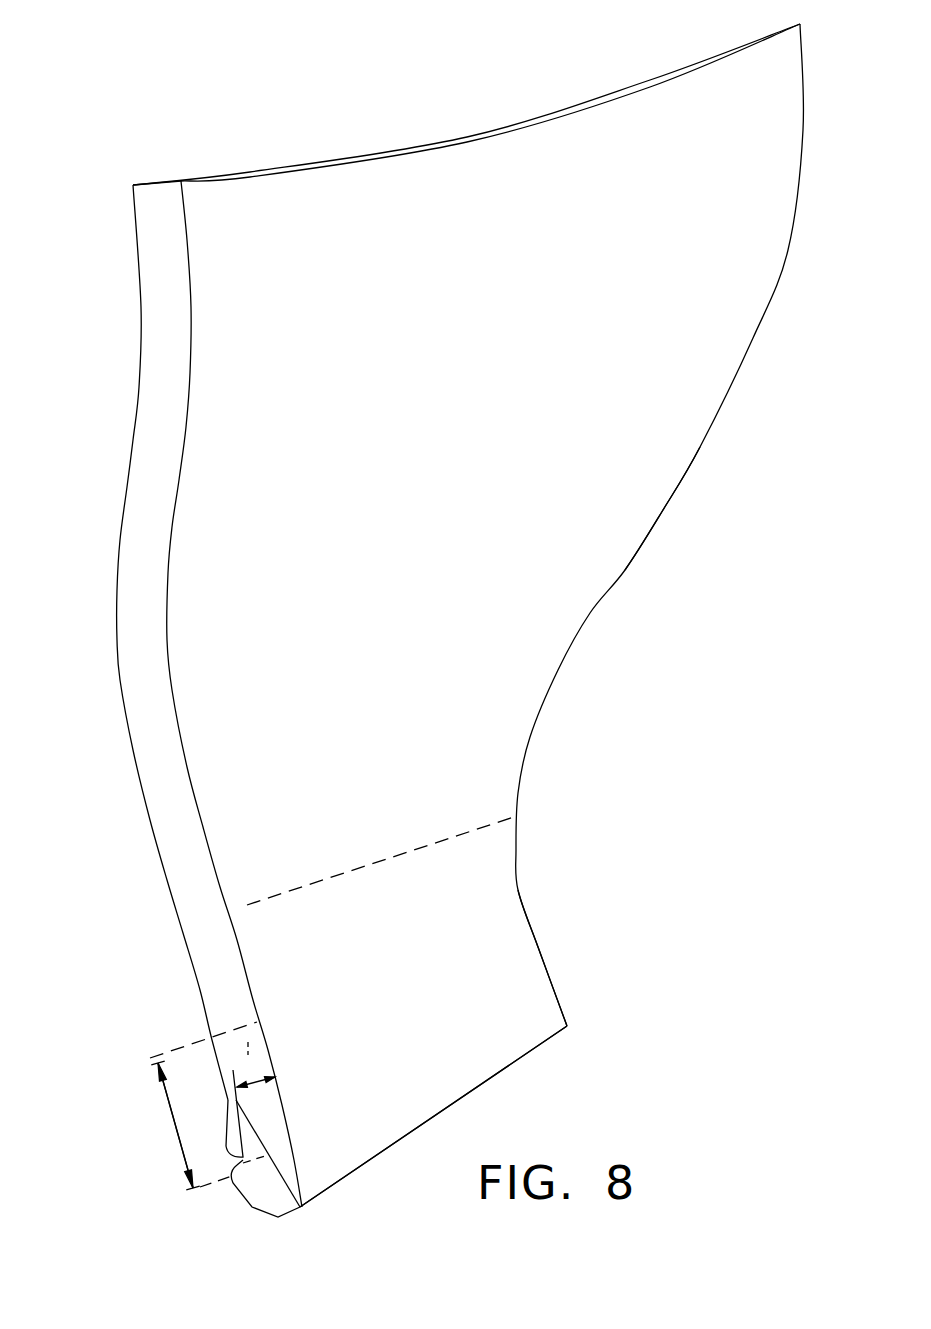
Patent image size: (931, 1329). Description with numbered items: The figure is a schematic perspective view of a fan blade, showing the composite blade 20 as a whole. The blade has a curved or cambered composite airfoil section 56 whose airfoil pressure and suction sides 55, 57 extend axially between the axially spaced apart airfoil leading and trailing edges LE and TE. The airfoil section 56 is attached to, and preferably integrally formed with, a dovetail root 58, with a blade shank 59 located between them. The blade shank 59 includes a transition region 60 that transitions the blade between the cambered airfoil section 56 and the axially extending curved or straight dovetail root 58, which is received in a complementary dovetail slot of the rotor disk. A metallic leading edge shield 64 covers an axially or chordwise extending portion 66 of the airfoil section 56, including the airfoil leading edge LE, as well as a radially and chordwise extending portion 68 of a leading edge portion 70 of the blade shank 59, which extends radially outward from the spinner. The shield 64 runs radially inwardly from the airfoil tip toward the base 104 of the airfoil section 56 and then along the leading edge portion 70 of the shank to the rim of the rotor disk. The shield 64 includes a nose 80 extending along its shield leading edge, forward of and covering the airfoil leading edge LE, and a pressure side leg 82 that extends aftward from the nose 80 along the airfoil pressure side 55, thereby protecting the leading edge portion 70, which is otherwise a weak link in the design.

The composite blade 20 is at (540, 1092).
The airfoil pressure side 55 is at (467, 137).
The composite airfoil section 56 is at (391, 419).
The airfoil suction side 57 is at (723, 308).
The dovetail root 58 is at (537, 1019).
The blade shank 59 is at (343, 1075).
The transition region 60 is at (345, 1120).
The metallic leading edge shield 64 is at (203, 923).
The axially or chordwise extending portion 66 is at (163, 183).
The radially and chordwise extending portion 68 is at (262, 1022).
The leading edge portion of the blade shank 70 is at (177, 1137).
The nose 80 is at (187, 1125).
The pressure side leg 82 is at (272, 1127).
The base of the composite airfoil section 104 is at (517, 815).
The airfoil leading edge LE is at (137, 387).
The airfoil trailing edge TE is at (663, 510).